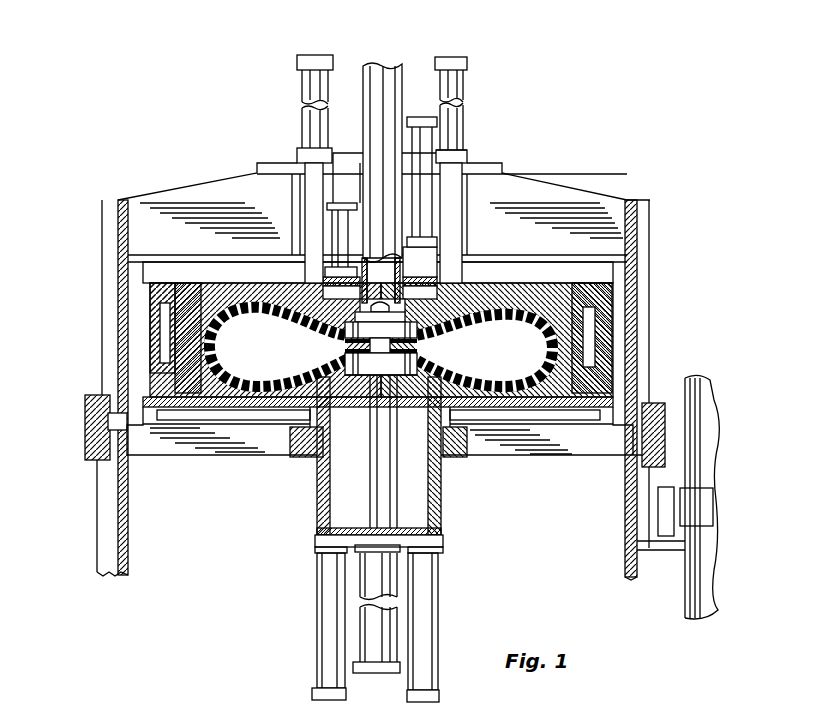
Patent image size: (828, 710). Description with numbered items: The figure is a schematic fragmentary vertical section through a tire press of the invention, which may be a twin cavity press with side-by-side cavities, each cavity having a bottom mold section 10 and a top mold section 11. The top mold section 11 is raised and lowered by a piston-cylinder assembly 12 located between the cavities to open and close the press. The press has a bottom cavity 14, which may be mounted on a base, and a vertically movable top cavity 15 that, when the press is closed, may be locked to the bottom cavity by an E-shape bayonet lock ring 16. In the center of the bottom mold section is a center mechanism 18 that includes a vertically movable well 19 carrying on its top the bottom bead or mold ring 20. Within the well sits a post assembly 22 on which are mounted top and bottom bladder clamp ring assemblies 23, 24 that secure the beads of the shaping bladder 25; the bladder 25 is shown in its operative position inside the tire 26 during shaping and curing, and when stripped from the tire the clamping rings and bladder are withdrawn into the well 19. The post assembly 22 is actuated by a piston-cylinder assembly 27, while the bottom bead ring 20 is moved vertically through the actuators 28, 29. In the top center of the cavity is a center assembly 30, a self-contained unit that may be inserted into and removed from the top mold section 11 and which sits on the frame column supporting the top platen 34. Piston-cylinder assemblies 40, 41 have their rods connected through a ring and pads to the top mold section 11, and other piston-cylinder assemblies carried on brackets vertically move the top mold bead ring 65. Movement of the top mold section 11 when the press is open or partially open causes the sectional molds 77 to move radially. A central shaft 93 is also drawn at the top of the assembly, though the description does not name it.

The bottom mold section 10 is at (510, 410).
The top mold section 11 is at (508, 290).
The piston-cylinder assembly 12 is at (705, 412).
The bottom cavity 14 is at (127, 513).
The top cavity 15 is at (125, 337).
The E-shape bayonet lock ring 16 is at (86, 438).
The center mechanism 18 is at (346, 465).
The well 19 is at (316, 495).
The bottom bead ring 20 is at (430, 355).
The post assembly 22 is at (393, 450).
The top bladder clamp ring assembly 23 is at (345, 339).
The bottom bladder clamp ring assembly 24 is at (362, 376).
The shaping bladder 25 is at (540, 336).
The tire 26 is at (565, 407).
The piston-cylinder assembly 27 is at (400, 632).
The actuator 28 is at (318, 600).
The actuator 29 is at (438, 595).
The center assembly 30 is at (476, 95).
The top platen 34 is at (583, 278).
The piston-cylinder assembly 40 is at (303, 118).
The piston-cylinder assembly 41 is at (462, 140).
The top mold bead ring 65 is at (440, 300).
The sectional molds 77 is at (150, 373).
The shaft 93 is at (396, 70).